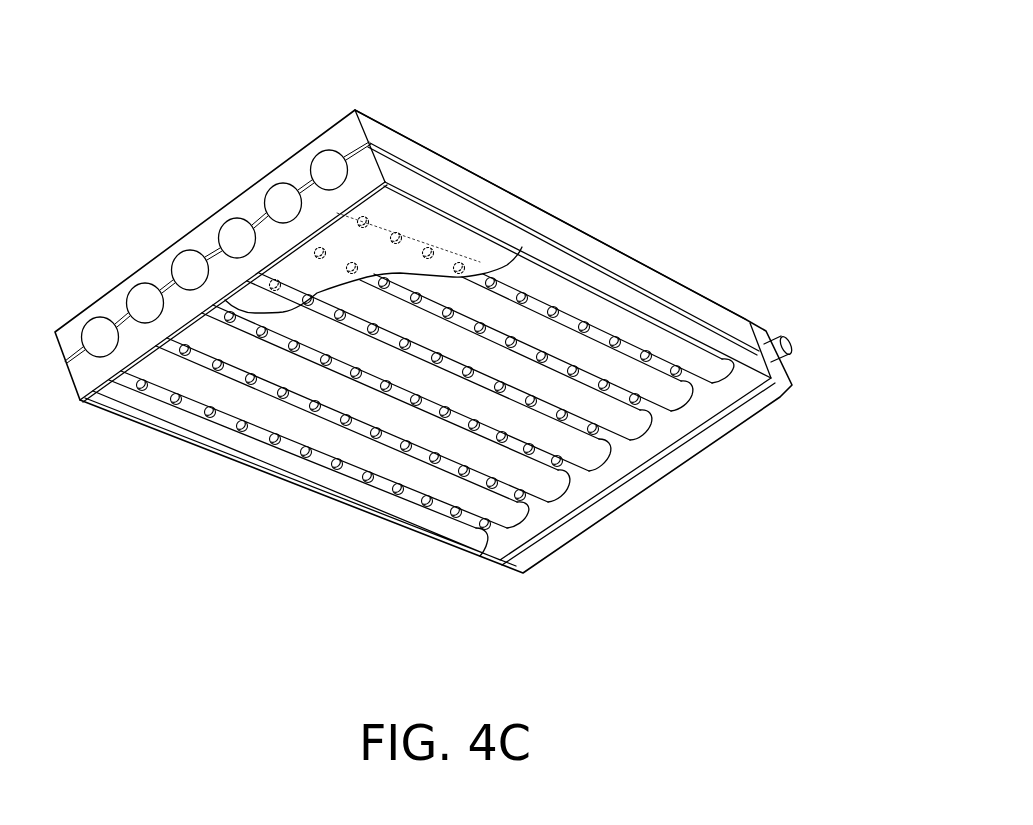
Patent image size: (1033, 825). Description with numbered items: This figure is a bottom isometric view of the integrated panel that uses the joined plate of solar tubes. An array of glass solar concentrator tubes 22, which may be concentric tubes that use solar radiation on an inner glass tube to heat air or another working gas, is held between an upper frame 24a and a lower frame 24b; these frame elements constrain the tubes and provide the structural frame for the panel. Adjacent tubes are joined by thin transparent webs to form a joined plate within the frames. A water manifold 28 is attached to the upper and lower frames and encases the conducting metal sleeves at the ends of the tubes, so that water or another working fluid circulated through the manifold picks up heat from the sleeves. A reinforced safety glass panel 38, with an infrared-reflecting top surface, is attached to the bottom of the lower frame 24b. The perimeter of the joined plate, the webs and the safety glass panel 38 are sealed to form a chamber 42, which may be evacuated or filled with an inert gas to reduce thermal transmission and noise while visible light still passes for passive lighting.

The glass solar concentrator tubes 22 is at (191, 268).
The upper frame 24a is at (430, 147).
The lower frame 24b is at (625, 295).
The water manifold 28 is at (762, 407).
The safety glass panel 38 is at (373, 248).
The chamber 42 is at (583, 485).